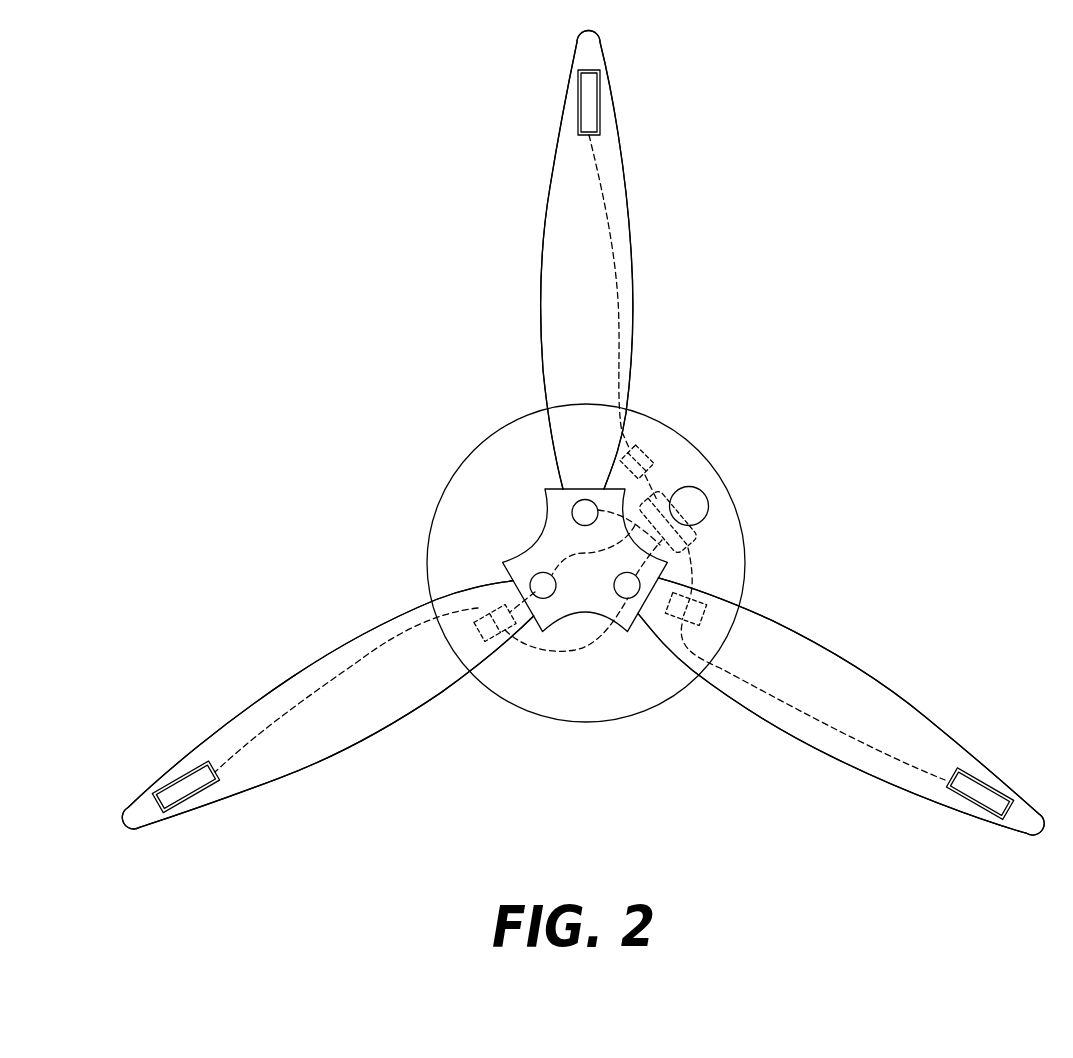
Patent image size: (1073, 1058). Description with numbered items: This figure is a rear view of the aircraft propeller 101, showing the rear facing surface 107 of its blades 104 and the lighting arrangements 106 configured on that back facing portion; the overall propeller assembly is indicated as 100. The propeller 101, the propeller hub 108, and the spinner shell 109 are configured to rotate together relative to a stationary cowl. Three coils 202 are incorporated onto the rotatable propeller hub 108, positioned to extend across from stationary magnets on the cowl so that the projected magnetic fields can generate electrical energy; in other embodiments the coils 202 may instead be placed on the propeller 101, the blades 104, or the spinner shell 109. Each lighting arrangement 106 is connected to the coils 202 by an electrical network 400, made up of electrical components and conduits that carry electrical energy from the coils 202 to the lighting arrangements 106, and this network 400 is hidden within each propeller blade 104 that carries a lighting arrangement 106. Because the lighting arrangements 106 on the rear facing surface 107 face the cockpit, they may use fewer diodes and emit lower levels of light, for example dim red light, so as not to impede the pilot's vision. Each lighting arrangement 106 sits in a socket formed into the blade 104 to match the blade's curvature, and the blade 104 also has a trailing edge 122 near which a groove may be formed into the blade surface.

The propulsion system 100 is at (246, 264).
The propeller 101 is at (707, 333).
The blade 104 is at (397, 795).
The lighting arrangement 106 is at (601, 102).
The rear facing surface 107 is at (550, 278).
The propeller hub 108 is at (540, 556).
The spinner shell 109 is at (730, 543).
The trailing edge 122 is at (622, 173).
The coil 202 is at (574, 502).
The electrical network 400 is at (610, 255).